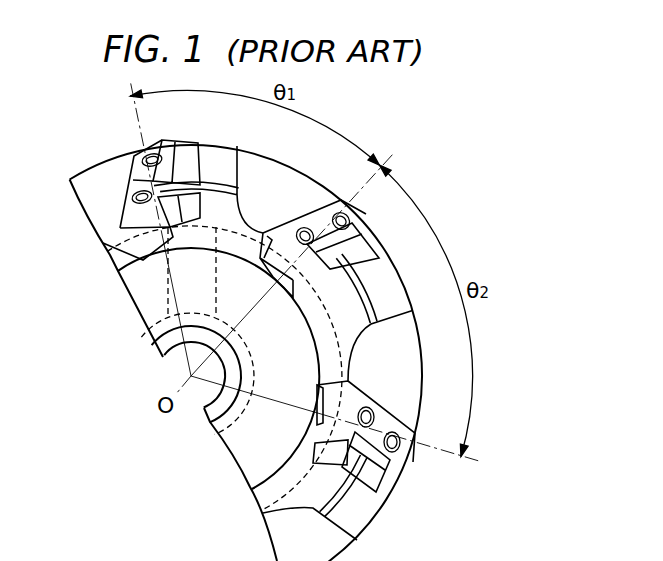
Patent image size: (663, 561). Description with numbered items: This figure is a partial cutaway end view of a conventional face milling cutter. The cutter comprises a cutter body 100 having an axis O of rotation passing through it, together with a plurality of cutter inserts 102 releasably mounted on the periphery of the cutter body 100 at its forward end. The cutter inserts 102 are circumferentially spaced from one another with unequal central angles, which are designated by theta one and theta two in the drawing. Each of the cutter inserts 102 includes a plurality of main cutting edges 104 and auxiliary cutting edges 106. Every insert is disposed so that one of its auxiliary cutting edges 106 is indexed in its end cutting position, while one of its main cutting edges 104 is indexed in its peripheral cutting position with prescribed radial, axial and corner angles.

The cutter body 100 is at (97, 162).
The cutter inserts 102 is at (165, 163).
The main cutting edges 104 is at (151, 153).
The auxiliary cutting edges 106 is at (158, 196).